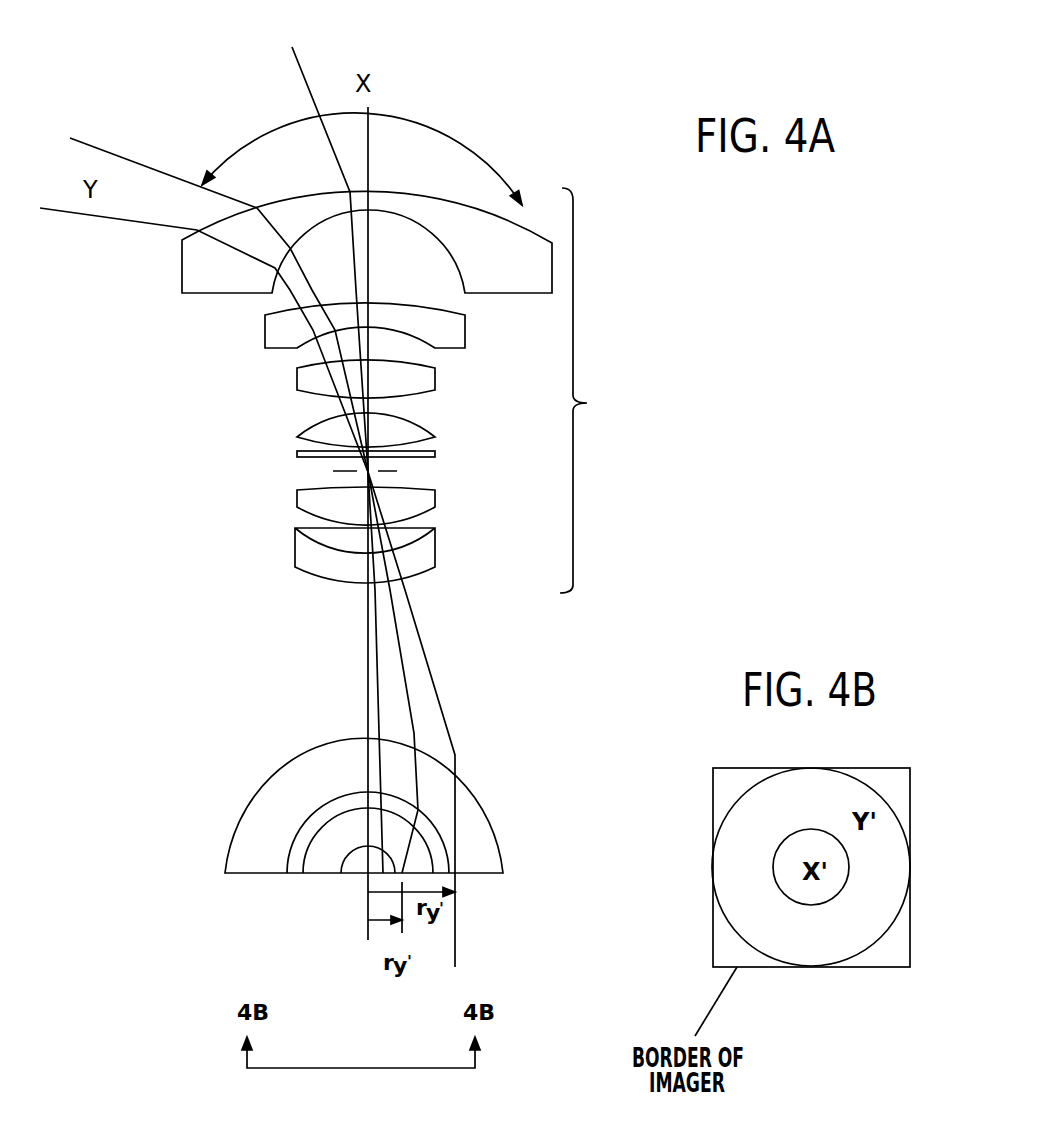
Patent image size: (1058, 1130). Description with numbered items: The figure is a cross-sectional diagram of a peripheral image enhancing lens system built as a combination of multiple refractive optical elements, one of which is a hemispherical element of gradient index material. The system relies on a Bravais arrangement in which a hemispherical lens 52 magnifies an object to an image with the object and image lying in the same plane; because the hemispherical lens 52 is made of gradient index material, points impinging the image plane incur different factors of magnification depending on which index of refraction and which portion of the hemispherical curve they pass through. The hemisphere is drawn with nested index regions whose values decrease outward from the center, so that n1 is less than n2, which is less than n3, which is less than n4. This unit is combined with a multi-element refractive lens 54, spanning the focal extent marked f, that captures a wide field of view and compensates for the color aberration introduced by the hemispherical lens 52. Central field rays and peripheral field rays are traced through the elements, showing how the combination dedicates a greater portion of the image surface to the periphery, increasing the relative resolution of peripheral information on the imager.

The hemispherical lens 52 is at (552, 277).
The multi-element refractive lens 54 is at (240, 422).
The focal length f is at (592, 390).
The index of refraction n1 is at (260, 875).
The index of refraction n2 is at (295, 875).
The index of refraction n3 is at (328, 875).
The index of refraction n4 is at (358, 877).